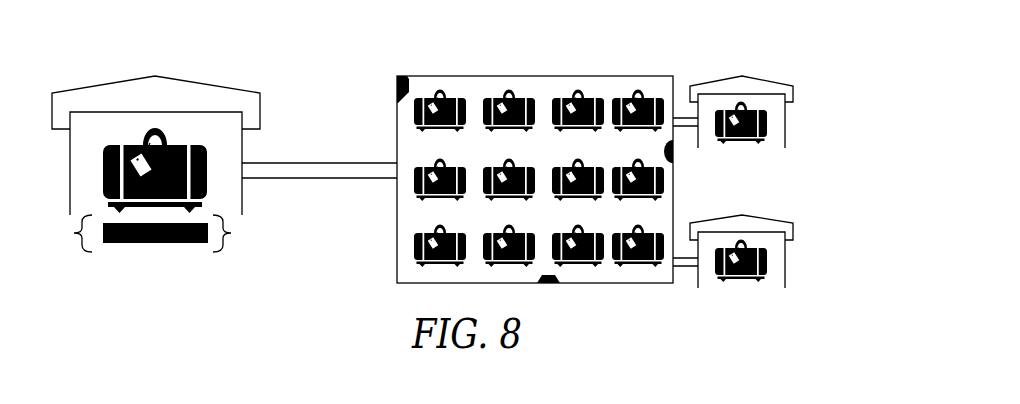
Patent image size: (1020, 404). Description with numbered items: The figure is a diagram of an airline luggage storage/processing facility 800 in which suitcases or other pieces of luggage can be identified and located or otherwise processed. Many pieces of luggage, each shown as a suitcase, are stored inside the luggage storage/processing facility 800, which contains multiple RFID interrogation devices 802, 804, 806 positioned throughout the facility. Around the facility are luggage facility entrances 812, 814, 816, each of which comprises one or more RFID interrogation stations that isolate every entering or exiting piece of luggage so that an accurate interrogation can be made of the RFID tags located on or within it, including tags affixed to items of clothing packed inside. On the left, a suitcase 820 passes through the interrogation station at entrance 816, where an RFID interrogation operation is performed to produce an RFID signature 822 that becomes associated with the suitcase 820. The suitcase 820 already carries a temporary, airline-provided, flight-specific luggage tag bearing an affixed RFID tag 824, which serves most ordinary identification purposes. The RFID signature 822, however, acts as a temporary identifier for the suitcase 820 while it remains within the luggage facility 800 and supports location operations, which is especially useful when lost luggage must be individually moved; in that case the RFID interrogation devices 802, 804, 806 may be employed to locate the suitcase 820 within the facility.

The luggage storage/processing facility 800 is at (395, 268).
The RFID interrogation device 802 is at (397, 90).
The RFID interrogation device 804 is at (674, 156).
The RFID interrogation device 806 is at (550, 285).
The luggage facility entrance 812 is at (795, 95).
The luggage facility entrance 814 is at (795, 233).
The luggage facility entrance 816 is at (258, 115).
The suitcase 820 is at (207, 180).
The RFID signature 822 is at (227, 243).
The RFID tag 824 is at (133, 165).